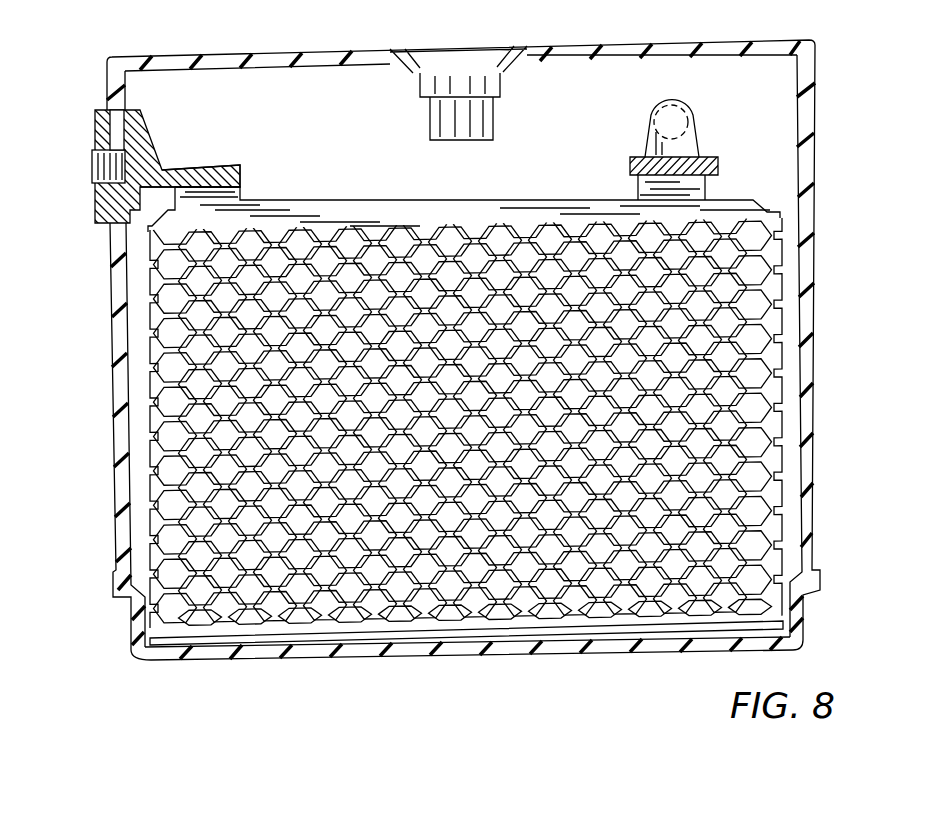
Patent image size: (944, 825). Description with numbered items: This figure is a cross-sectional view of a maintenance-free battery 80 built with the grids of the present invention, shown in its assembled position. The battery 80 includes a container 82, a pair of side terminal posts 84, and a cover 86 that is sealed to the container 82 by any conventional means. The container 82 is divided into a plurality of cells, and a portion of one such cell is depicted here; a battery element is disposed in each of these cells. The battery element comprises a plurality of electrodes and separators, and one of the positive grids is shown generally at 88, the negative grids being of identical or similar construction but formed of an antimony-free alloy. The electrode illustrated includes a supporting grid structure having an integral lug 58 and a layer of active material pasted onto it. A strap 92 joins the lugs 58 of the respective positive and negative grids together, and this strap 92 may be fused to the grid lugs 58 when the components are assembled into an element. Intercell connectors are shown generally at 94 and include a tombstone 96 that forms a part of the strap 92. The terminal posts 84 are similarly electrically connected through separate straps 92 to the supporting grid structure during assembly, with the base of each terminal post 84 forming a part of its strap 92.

The maintenance-free battery 80 is at (224, 660).
The container 82 is at (812, 258).
The side terminal post 84 is at (95, 128).
The cover 86 is at (633, 41).
The positive grid 88 is at (150, 542).
The strap 92 is at (210, 166).
The intercell connector 94 is at (692, 123).
The tombstone 96 is at (678, 145).
The lug 58 is at (236, 194).